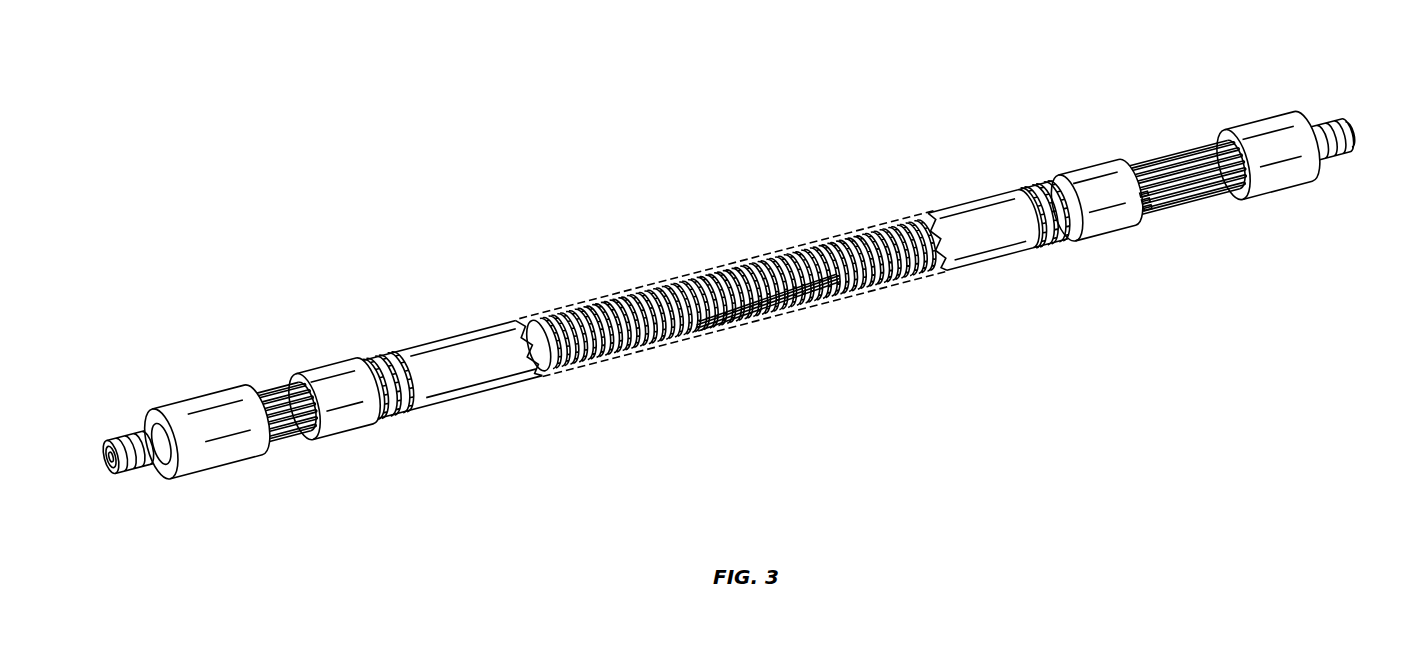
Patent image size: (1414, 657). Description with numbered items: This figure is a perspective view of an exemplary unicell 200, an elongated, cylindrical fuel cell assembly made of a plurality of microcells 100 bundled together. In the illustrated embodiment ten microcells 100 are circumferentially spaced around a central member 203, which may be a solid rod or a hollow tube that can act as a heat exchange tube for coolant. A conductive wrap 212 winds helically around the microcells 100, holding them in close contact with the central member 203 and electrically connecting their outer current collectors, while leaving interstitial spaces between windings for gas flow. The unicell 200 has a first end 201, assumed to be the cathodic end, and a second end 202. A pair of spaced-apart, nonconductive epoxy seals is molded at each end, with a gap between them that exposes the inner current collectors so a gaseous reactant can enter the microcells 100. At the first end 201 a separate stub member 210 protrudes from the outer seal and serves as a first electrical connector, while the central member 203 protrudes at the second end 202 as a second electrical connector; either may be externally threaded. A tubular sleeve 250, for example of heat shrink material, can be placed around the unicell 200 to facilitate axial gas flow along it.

The microcell 100 is at (772, 312).
The unicell 200 is at (810, 100).
The first end 201 is at (157, 350).
The second end 202 is at (1290, 210).
The central member 203 is at (1323, 150).
The stub member 210 is at (152, 467).
The conductive wrap 212 is at (580, 307).
The tubular sleeve 250 is at (450, 343).